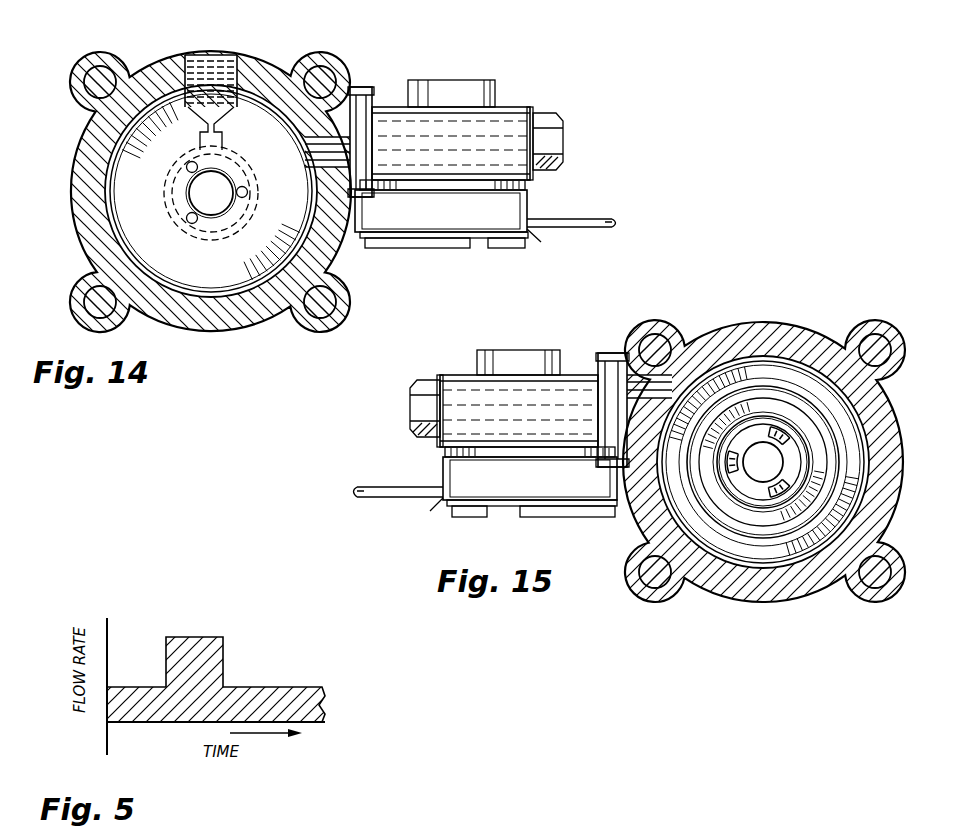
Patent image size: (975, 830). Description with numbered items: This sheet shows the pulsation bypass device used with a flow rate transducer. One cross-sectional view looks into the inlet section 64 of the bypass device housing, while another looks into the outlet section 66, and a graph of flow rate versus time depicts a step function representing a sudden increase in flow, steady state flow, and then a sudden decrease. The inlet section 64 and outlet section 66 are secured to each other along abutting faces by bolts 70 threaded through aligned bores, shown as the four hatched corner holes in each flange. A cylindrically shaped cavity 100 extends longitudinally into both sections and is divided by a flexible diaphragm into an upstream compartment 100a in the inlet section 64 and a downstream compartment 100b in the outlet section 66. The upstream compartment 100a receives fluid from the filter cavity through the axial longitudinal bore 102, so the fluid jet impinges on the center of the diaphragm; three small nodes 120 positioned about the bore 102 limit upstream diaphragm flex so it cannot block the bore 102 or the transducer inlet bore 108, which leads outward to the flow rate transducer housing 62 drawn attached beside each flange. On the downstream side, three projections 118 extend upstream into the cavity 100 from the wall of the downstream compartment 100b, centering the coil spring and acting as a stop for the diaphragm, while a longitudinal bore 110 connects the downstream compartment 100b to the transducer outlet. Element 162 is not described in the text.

In FIG. 15, the flow rate transducer housing 62 is at (516, 341).
In FIG. 14, the inlet section 64 is at (76, 176).
In FIG. 15, the outlet section 66 is at (843, 348).
In FIG. 14, the bolts 70 is at (100, 68).
In FIG. 15, the bolts 70 is at (656, 334).
In FIG. 14, the cylindrically shaped cavity 100 is at (220, 276).
In FIG. 15, the cylindrically shaped cavity 100 is at (741, 372).
In FIG. 14, the upstream compartment 100a is at (196, 286).
In FIG. 15, the downstream compartment 100b is at (785, 428).
In FIG. 14, the longitudinal bore 102 is at (232, 170).
In FIG. 14, the bore 108 is at (350, 90).
In FIG. 15, the longitudinal bore 110 is at (615, 353).
In FIG. 15, the projections 118 is at (790, 430).
In FIG. 14, the nodes 120 is at (186, 169).
In FIG. 14, the solenoid top boss 162 is at (463, 70).